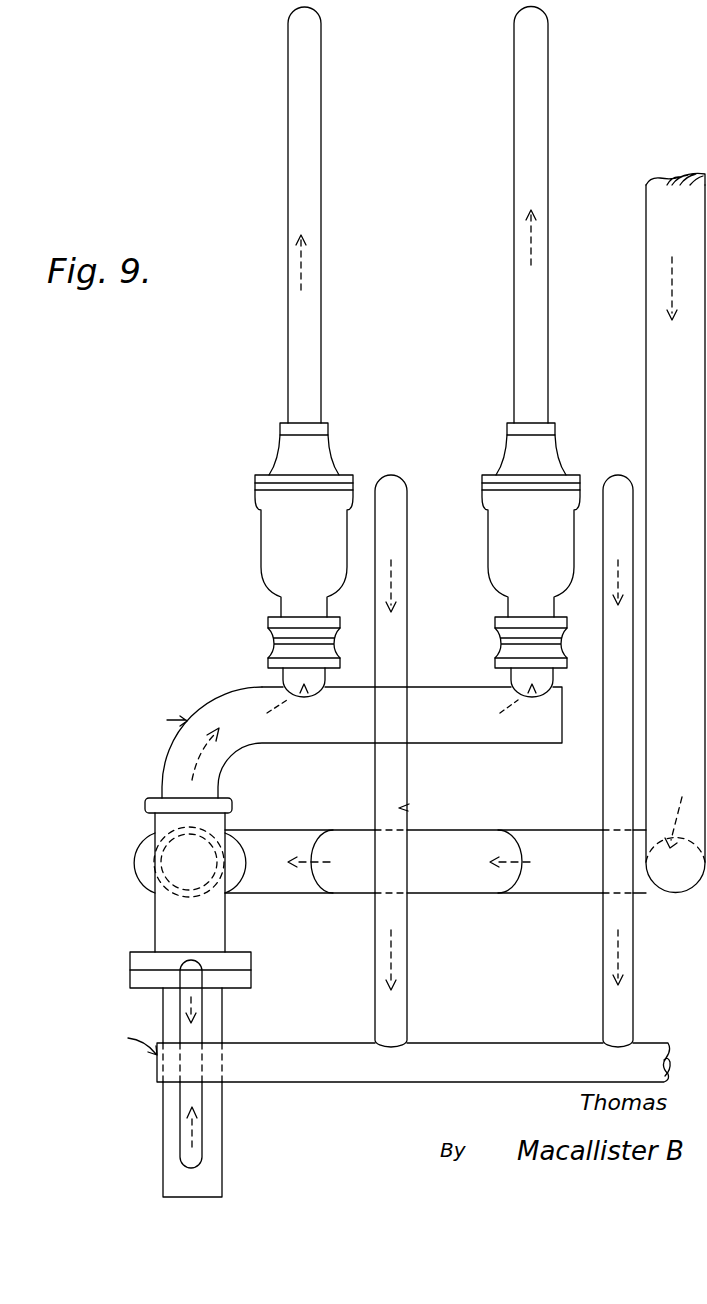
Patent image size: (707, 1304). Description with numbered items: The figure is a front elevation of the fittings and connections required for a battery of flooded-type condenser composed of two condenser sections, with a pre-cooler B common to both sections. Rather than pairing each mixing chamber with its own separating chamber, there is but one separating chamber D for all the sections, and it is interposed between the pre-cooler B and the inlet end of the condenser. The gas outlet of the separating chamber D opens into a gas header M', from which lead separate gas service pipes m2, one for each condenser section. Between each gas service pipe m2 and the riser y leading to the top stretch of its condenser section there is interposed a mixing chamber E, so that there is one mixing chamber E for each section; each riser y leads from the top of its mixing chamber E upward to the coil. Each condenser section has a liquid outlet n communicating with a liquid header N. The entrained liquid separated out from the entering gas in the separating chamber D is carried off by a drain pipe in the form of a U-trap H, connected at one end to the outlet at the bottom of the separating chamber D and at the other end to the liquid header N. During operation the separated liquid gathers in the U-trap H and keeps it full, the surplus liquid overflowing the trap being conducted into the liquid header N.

The riser y is at (316, 123).
The mixing chamber E is at (267, 532).
The gas service pipe m2 is at (524, 677).
The gas header M' is at (307, 742).
The separating chamber D is at (165, 927).
The pre-cooler B is at (453, 888).
The liquid outlet n is at (398, 490).
The liquid header N is at (303, 1033).
The U-trap H is at (198, 1127).